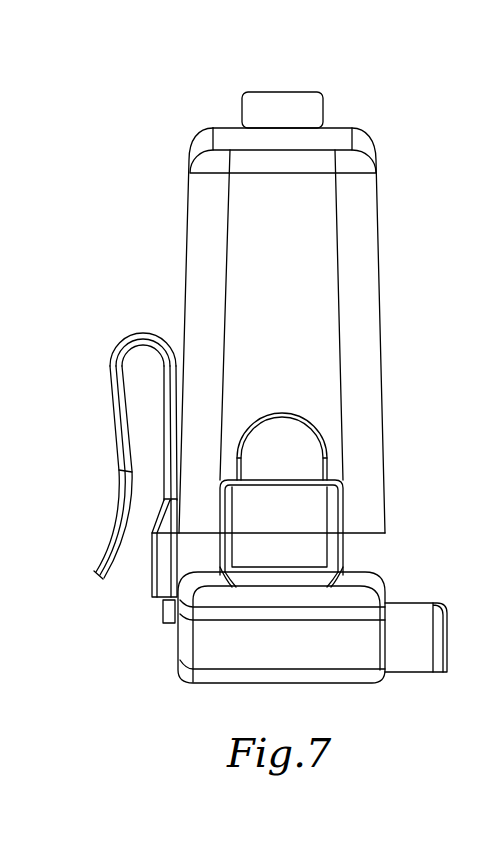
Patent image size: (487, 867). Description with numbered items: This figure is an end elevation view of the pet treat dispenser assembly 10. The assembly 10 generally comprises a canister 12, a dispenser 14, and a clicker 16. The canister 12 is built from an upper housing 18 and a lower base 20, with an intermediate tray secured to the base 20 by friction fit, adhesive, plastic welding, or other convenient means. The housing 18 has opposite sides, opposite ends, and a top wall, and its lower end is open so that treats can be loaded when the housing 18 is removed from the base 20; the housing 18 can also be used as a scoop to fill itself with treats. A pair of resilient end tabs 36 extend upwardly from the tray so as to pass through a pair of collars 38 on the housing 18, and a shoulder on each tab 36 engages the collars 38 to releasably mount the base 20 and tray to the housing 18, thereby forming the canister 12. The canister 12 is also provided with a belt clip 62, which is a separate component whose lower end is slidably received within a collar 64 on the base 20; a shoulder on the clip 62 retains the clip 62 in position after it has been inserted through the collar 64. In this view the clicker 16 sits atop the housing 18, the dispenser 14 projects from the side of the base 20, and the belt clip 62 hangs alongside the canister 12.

The pet treat dispenser assembly 10 is at (149, 104).
The canister 12 is at (348, 226).
The dispenser 14 is at (403, 604).
The clicker 16 is at (298, 90).
The upper housing 18 is at (186, 281).
The lower base 20 is at (190, 648).
The resilient end tabs 36 is at (298, 448).
The collars 38 is at (303, 513).
The belt clip 62 is at (118, 344).
The collar 64 is at (165, 590).